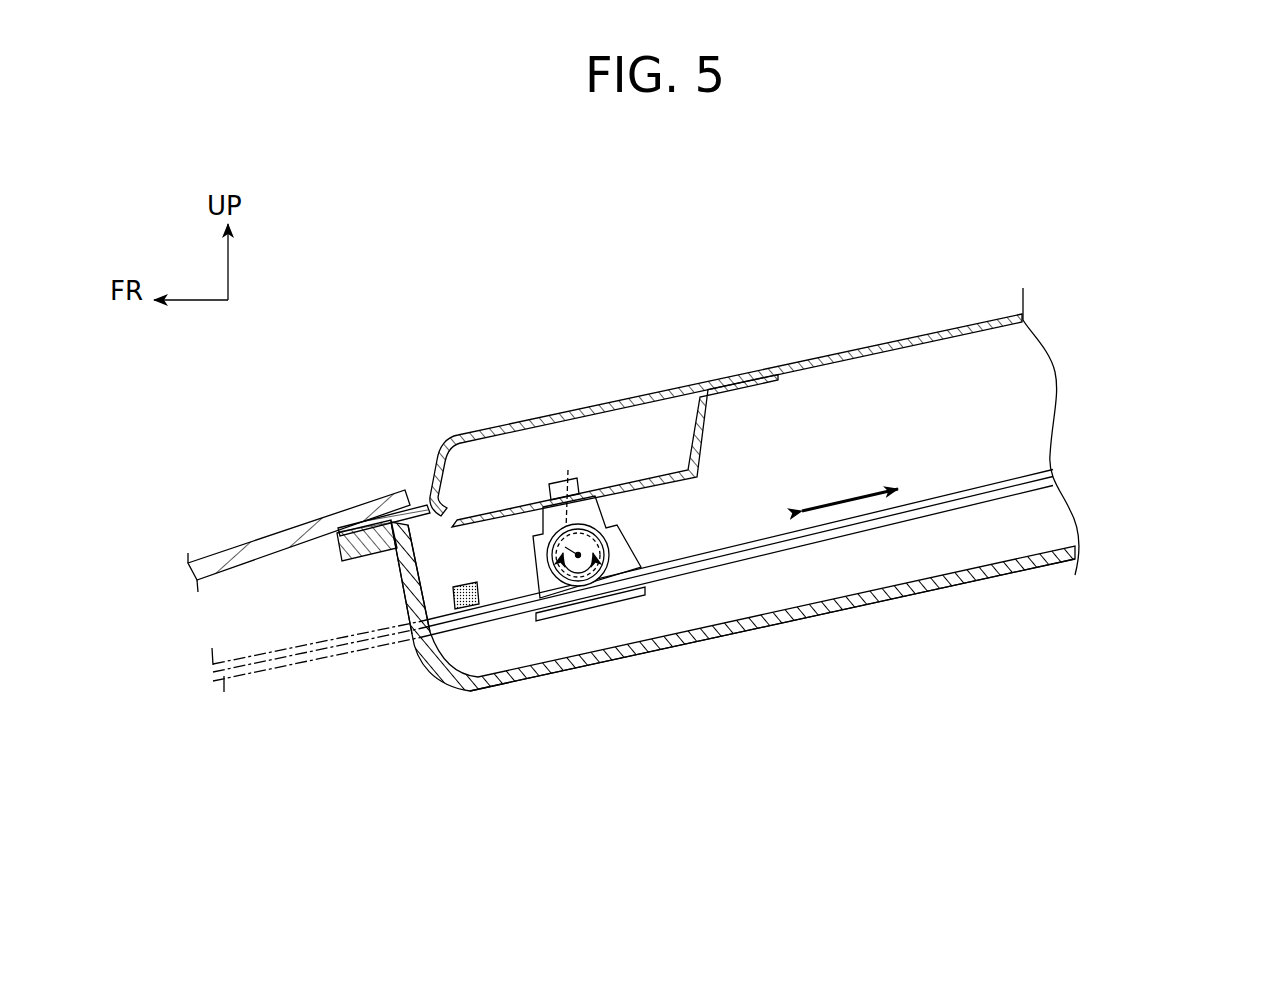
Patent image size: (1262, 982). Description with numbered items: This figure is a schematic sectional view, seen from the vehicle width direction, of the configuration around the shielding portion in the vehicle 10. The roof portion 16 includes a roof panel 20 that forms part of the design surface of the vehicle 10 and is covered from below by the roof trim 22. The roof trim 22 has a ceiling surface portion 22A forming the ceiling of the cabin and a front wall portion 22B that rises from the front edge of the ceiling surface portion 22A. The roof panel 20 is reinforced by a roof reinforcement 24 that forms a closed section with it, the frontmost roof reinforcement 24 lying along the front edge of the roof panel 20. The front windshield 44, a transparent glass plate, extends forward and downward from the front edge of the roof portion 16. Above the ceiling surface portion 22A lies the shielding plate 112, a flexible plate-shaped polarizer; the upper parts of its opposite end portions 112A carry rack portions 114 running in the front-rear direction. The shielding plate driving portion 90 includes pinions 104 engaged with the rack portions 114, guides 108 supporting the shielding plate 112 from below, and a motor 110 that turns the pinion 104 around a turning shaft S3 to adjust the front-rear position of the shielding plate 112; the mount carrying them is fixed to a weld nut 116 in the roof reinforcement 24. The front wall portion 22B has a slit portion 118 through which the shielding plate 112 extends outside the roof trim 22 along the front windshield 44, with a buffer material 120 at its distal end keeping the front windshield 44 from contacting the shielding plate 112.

The vehicle 10 is at (885, 262).
The roof portion 16 is at (726, 383).
The roof panel 20 is at (945, 326).
The roof trim 22 is at (682, 626).
The ceiling surface portion 22A is at (727, 634).
The front wall portion 22B is at (398, 556).
The roof reinforcement 24 is at (598, 492).
The front windshield 44 is at (288, 531).
The shielding plate driving portion 90 is at (822, 517).
The pinion 104 is at (610, 521).
The guide 108 is at (646, 592).
The motor 110 is at (590, 557).
The shielding plate 112 is at (822, 511).
The opposite end portion 112A is at (1018, 481).
The rack portion 114 is at (749, 547).
The weld nut 116 is at (549, 483).
The slit portion 118 is at (416, 633).
The buffer material 120 is at (480, 600).
The turning shaft S3 is at (545, 541).